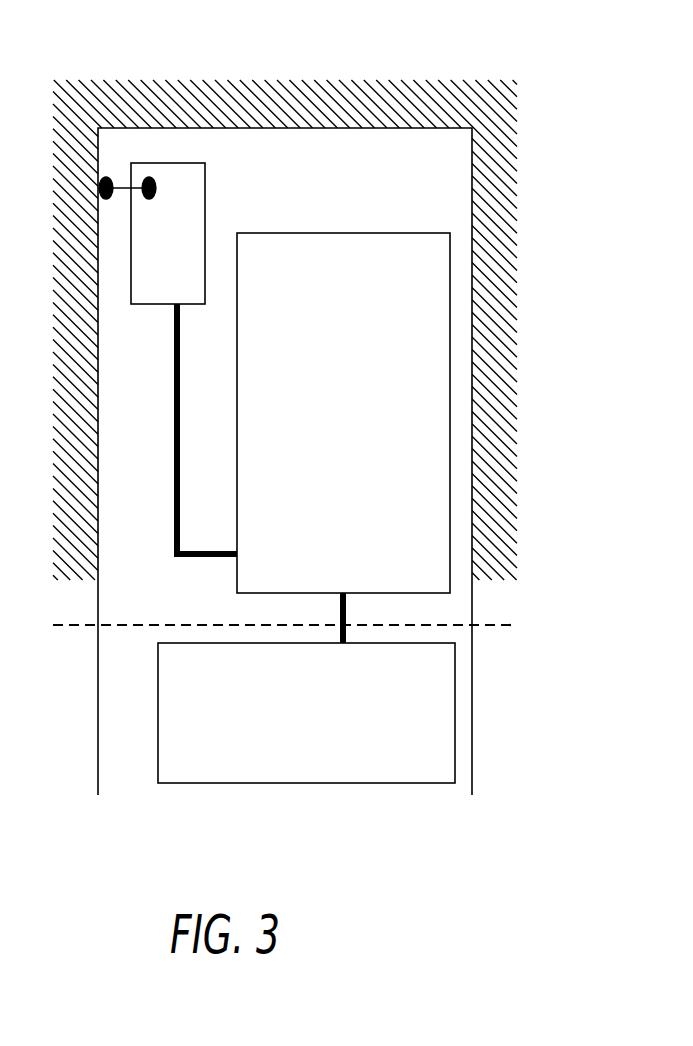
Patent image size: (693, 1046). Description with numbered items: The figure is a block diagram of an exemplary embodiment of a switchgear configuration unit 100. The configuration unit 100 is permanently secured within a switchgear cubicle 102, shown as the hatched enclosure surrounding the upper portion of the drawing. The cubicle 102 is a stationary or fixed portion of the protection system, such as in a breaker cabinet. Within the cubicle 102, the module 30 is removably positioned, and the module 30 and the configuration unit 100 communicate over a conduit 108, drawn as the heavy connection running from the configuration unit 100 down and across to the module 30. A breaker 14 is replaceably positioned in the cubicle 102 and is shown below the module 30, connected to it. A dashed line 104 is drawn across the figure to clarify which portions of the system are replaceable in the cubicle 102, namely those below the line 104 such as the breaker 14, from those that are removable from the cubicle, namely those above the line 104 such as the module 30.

The switchgear cubicle 102 is at (503, 95).
The switchgear configuration unit 100 is at (205, 175).
The module 30 is at (450, 293).
The conduit 108 is at (174, 432).
The line 104 is at (503, 623).
The breaker 14 is at (353, 783).